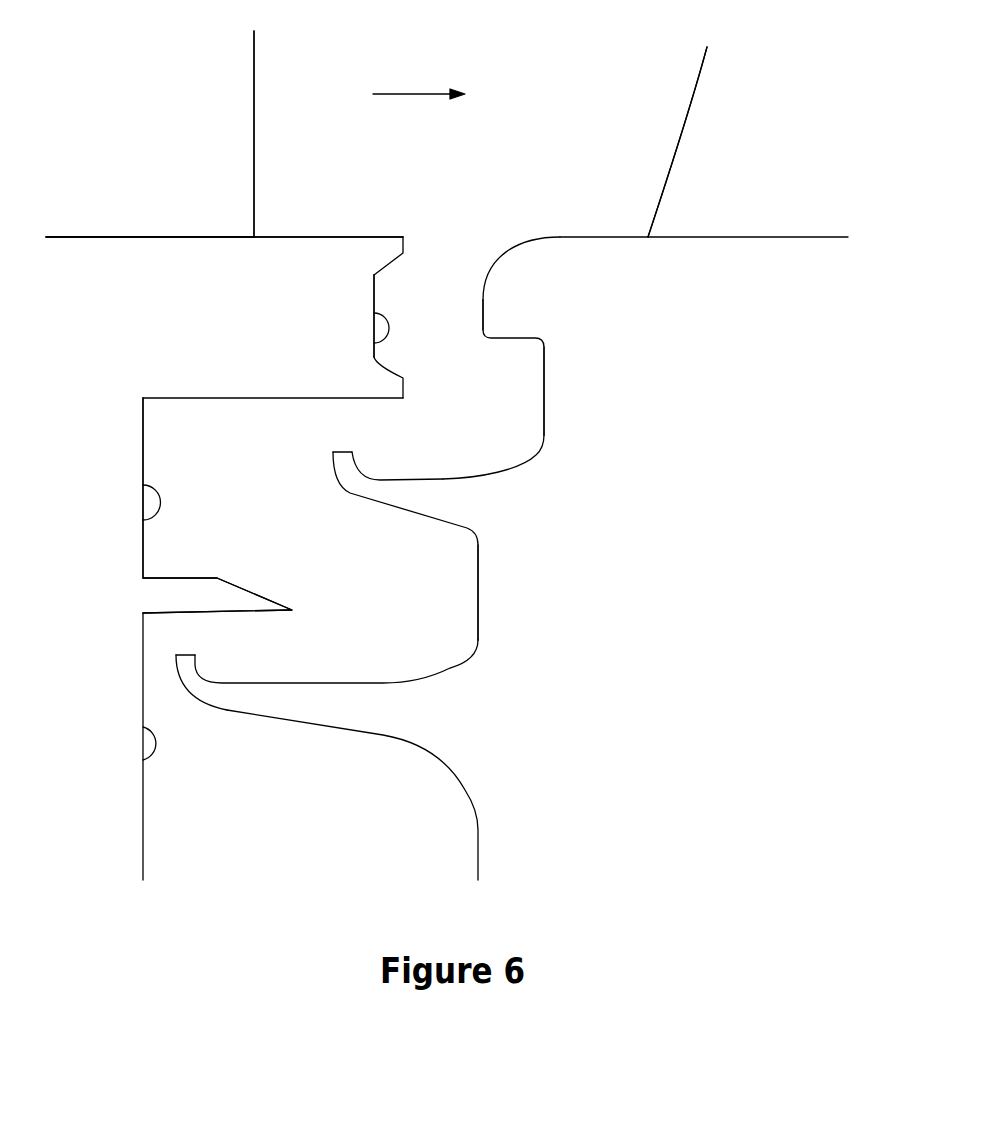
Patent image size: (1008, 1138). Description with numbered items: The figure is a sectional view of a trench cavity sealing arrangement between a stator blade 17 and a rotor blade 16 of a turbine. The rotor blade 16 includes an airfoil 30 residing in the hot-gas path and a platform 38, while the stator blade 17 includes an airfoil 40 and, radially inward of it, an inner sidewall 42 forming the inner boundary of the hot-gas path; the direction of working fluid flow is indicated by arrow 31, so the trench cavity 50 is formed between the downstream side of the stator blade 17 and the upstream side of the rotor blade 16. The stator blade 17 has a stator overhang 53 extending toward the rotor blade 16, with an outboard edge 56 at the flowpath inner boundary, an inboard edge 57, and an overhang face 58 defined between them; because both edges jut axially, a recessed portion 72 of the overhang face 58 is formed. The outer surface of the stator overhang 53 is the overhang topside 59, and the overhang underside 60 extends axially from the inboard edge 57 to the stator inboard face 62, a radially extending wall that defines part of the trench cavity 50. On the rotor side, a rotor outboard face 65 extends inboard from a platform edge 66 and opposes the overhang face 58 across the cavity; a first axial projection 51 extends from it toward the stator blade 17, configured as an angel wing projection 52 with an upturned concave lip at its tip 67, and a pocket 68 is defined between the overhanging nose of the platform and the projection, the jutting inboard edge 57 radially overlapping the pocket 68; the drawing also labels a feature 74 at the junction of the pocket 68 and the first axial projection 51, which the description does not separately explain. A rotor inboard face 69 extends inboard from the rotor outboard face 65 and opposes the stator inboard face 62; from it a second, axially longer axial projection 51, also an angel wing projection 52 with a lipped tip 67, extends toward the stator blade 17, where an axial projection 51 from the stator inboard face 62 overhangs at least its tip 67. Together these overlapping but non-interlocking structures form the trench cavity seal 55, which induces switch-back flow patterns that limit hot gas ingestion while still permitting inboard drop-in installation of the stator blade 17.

The rotor blade 16 is at (815, 97).
The stator blade 17 is at (130, 100).
The airfoil 30 is at (757, 114).
The arrow indicating flow direction 31 is at (418, 92).
The platform 38 is at (728, 237).
The airfoil 40 is at (184, 110).
The inner sidewall 42 is at (155, 237).
The trench cavity 50 is at (454, 329).
The axial projection 51 is at (197, 598).
The angel wing projection 52 is at (355, 478).
The stator overhang 53 is at (329, 324).
The trench cavity seal 55 is at (522, 318).
The outboard edge 56 is at (390, 250).
The inboard edge 57 is at (387, 386).
The overhang face 58 is at (374, 345).
The overhang topside 59 is at (331, 237).
The overhang underside 60 is at (233, 398).
The stator inboard face 62 is at (142, 485).
The rotor outboard face 65 is at (568, 402).
The platform edge 66 is at (510, 258).
The tip 67 is at (348, 452).
The pocket 68 is at (522, 416).
The rotor inboard face 69 is at (530, 610).
The recessed portion 72 is at (392, 293).
The fillet 74 is at (430, 479).